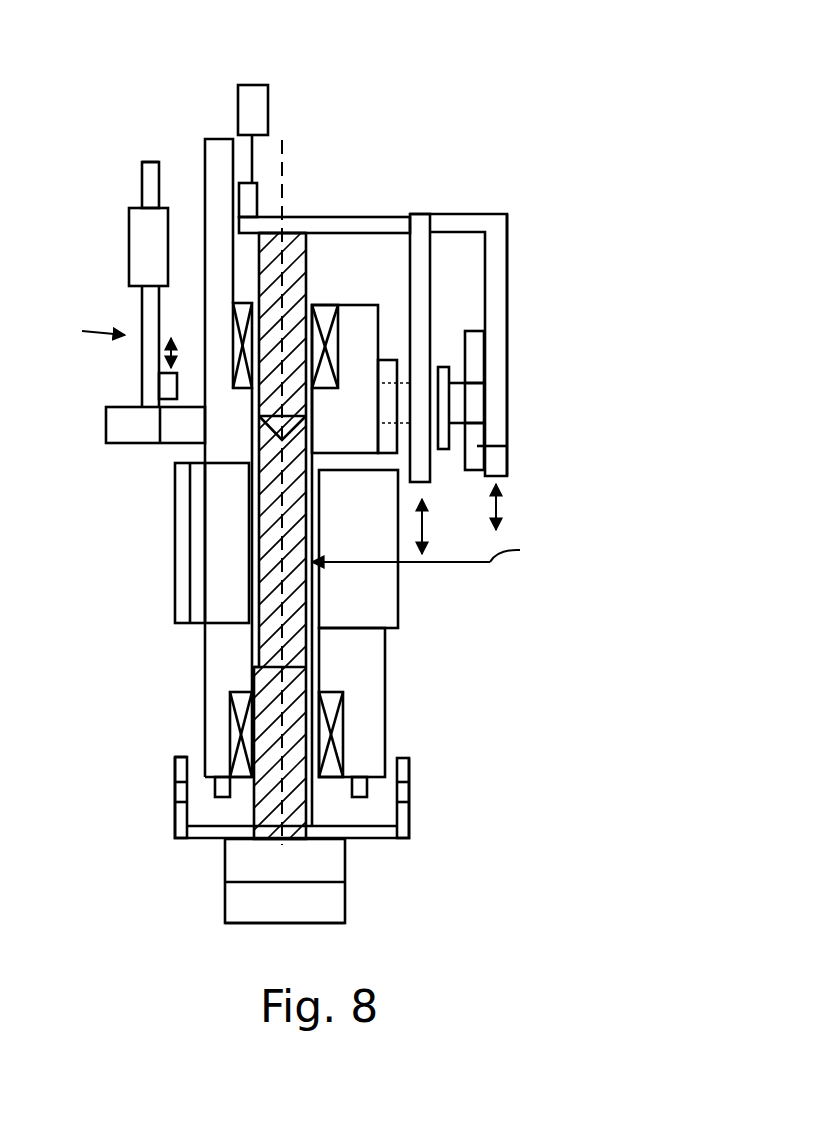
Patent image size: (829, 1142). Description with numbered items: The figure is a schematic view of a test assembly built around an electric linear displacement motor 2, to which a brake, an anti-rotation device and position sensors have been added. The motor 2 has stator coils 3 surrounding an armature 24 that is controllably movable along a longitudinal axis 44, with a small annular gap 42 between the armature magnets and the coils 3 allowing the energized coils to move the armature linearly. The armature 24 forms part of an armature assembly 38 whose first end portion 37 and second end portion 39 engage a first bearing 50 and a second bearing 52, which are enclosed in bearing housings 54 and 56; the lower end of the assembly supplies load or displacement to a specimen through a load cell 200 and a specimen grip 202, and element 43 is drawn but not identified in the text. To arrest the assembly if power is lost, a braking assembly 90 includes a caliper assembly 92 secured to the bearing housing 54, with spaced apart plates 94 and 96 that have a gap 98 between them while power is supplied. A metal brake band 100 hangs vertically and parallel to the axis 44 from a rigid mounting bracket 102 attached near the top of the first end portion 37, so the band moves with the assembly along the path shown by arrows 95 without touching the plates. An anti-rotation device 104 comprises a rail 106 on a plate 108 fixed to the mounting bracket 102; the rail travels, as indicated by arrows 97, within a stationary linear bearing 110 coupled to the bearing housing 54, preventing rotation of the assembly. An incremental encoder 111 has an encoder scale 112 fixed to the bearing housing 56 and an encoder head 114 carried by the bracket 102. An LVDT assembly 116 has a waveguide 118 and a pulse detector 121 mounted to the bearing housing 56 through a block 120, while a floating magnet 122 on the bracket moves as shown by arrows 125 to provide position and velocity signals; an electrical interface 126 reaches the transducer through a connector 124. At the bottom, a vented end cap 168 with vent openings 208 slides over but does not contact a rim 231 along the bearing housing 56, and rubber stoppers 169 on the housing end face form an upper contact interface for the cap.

The electric linear displacement motor 2 is at (182, 575).
The coils 3 is at (217, 525).
The armature 24 is at (296, 575).
The first end portion 37 is at (290, 245).
The armature assembly 38 is at (429, 552).
The second end portion 39 is at (240, 812).
The annular gap 42 is at (312, 615).
The rotor 43 is at (243, 489).
The longitudinal axis 44 is at (306, 165).
The first bearing 50 is at (325, 318).
The second bearing 52 is at (230, 733).
The bearing housing 54 is at (362, 318).
The bearing housing 56 is at (205, 672).
The braking assembly 90 is at (436, 263).
The caliper assembly 92 is at (397, 346).
The caliper plate 94 is at (386, 425).
The arrows 95 is at (424, 528).
The caliper plate 96 is at (442, 366).
The arrows 97 is at (498, 505).
The gap 98 is at (450, 418).
The brake band 100 is at (420, 247).
The mounting bracket 102 is at (387, 216).
The anti-rotation device 104 is at (516, 334).
The rail 106 is at (480, 446).
The plate 108 is at (500, 416).
The linear bearing 110 is at (463, 392).
The incremental encoder 111 is at (272, 88).
The encoder scale 112 is at (215, 152).
The encoder head 114 is at (254, 172).
The LVDT assembly 116 is at (85, 327).
The waveguide 118 is at (150, 366).
The block 120 is at (176, 440).
The pulse detector 121 is at (150, 242).
The floating magnet 122 is at (160, 385).
The connector 124 is at (150, 186).
The arrows 125 is at (178, 344).
The electrical interface 126 is at (152, 160).
The end cap 168 is at (175, 830).
The rubber stoppers 169 is at (360, 778).
The load cell 200 is at (350, 863).
The specimen grip 202 is at (272, 905).
The vent openings 208 is at (409, 785).
The rim 231 is at (172, 770).